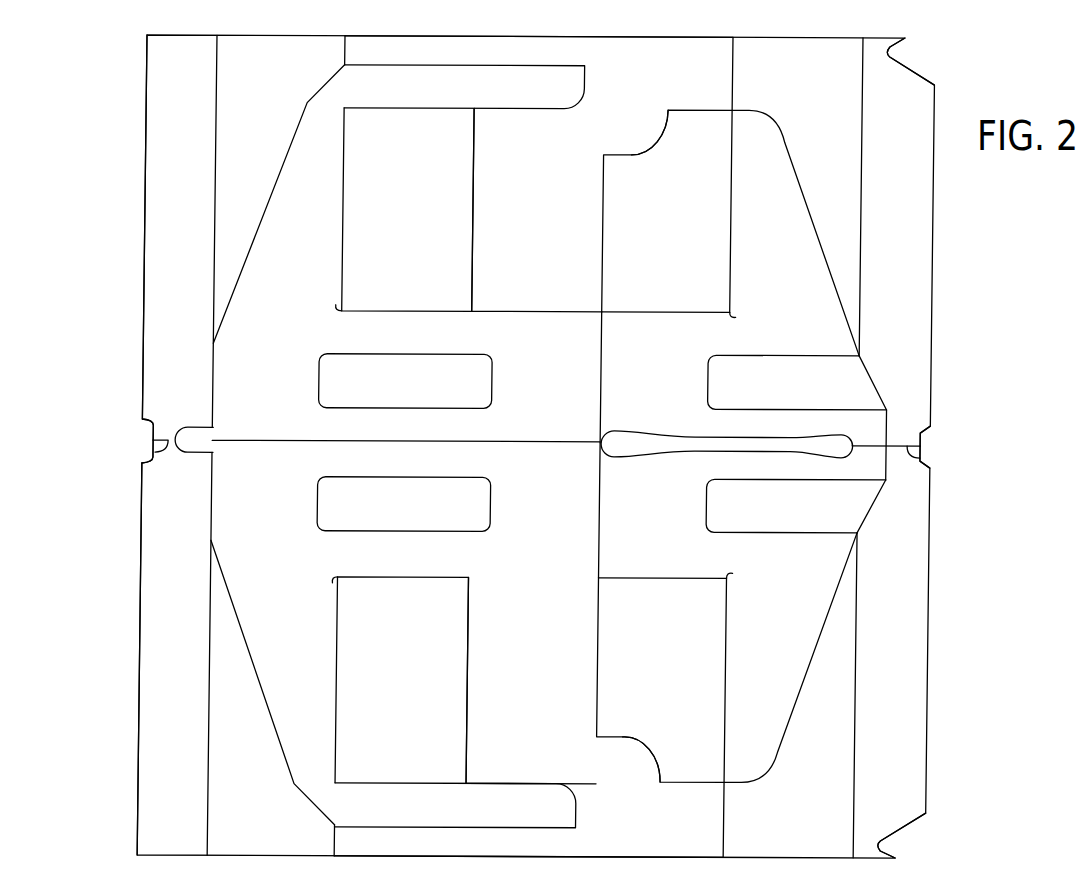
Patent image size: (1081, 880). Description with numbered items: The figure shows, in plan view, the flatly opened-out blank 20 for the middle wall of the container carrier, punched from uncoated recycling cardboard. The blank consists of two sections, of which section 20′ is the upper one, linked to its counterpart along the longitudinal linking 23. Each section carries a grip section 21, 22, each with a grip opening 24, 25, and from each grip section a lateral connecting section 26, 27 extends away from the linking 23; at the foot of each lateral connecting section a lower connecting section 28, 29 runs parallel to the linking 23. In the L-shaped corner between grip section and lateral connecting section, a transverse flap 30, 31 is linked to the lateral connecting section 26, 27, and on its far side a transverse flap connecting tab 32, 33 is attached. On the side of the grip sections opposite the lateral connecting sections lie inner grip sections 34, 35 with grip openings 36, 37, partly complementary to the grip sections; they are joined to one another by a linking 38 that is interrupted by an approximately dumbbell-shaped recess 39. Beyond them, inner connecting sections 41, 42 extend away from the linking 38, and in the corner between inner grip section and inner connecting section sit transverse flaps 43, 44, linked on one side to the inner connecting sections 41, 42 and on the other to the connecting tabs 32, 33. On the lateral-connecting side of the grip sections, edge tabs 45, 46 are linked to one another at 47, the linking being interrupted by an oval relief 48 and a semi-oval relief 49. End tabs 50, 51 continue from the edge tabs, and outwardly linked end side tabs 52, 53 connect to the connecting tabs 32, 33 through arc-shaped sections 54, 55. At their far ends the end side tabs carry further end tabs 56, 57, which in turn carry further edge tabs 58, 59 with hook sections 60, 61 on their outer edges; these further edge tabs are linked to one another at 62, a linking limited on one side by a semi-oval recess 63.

The blank 20 is at (103, 203).
The section 20′ is at (142, 306).
The grip section 21 is at (562, 393).
The grip section 22 is at (566, 518).
The linking 23 is at (512, 443).
The grip opening 24 is at (325, 372).
The grip opening 25 is at (325, 498).
The lateral connecting section 26 is at (319, 233).
The lateral connecting section 27 is at (314, 692).
The lower connecting section 28 is at (509, 103).
The lower connecting section 29 is at (491, 818).
The transverse flap 30 is at (427, 233).
The transverse flap 31 is at (416, 692).
The transverse flap connecting tab 32 is at (549, 233).
The transverse flap connecting tab 33 is at (551, 693).
The inner grip section 34 is at (679, 393).
The inner grip section 35 is at (681, 518).
The grip opening 36 is at (859, 382).
The grip opening 37 is at (853, 510).
The linking 38 is at (866, 444).
The dumbbell-shaped recess 39 is at (643, 446).
The inner connecting section 41 is at (786, 233).
The inner connecting section 42 is at (776, 695).
The transverse flap 43 is at (682, 233).
The transverse flap 44 is at (679, 693).
The edge tab 45 is at (191, 213).
The edge tab 46 is at (186, 692).
The linking 47 is at (148, 452).
The oval relief 48 is at (197, 428).
The semi-oval relief 49 is at (148, 423).
The end tab 50 is at (274, 118).
The end tab 51 is at (254, 763).
The end side tab 52 is at (534, 67).
The end side tab 53 is at (517, 855).
The arc-shaped section 54 is at (644, 133).
The arc-shaped section 55 is at (631, 783).
The further end tab 56 is at (832, 120).
The further end tab 57 is at (811, 830).
The further edge tab 58 is at (911, 215).
The further edge tab 59 is at (907, 695).
The hook section 60 is at (906, 43).
The hook section 61 is at (894, 850).
The linking 62 is at (921, 456).
The semi-oval recess 63 is at (930, 428).